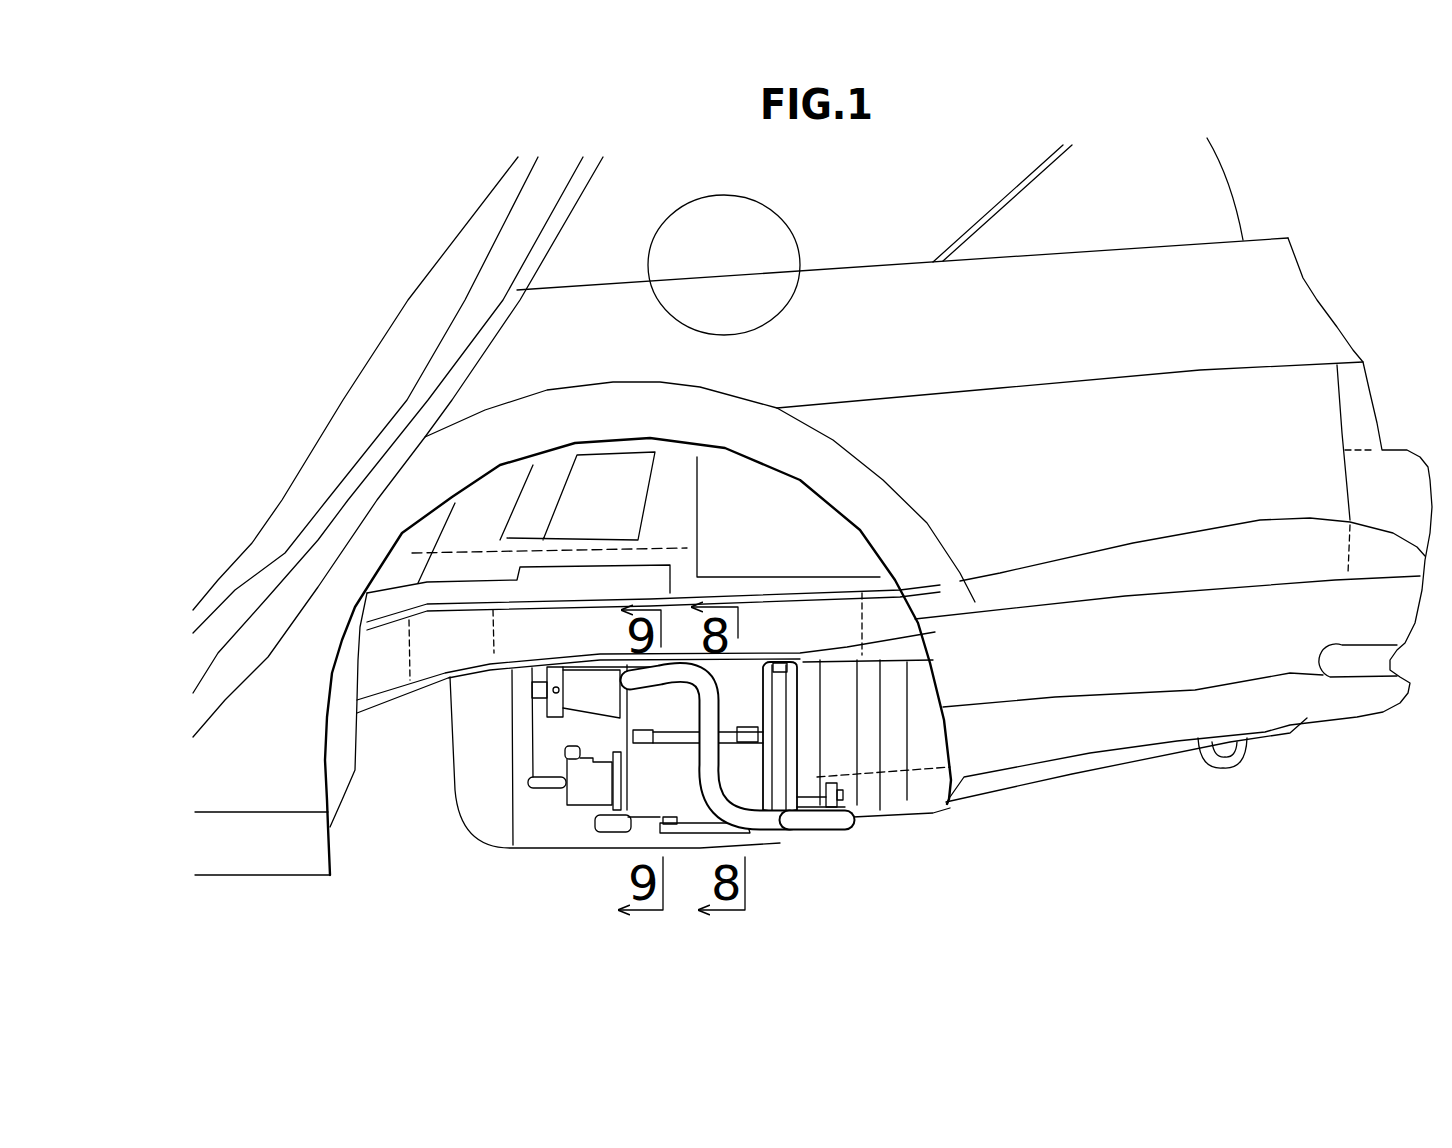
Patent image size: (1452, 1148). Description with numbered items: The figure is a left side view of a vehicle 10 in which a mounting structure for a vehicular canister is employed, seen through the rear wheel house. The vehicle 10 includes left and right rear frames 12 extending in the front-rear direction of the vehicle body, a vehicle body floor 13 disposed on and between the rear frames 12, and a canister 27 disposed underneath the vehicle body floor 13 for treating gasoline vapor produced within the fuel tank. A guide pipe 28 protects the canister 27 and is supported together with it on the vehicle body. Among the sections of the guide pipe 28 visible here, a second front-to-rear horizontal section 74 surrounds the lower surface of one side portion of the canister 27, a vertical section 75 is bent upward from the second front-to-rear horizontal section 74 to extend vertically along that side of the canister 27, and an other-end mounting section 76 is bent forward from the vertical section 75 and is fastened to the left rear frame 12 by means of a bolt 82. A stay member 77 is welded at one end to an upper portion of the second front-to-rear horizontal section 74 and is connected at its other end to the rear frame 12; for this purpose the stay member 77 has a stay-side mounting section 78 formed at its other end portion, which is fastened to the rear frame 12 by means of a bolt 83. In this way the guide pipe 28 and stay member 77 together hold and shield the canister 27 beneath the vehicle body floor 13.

The vehicle 10 is at (297, 150).
The rear frame 12 is at (789, 579).
The vehicle body floor 13 is at (454, 807).
The vehicular canister 27 is at (559, 804).
The guide pipe 28 is at (781, 842).
The second front-to-rear horizontal section 74 is at (807, 827).
The vertical section 75 is at (703, 757).
The other-end mounting section 76 is at (648, 666).
The stay member 77 is at (800, 703).
The stay-side mounting section 78 is at (792, 658).
The bolt 82 is at (655, 680).
The bolt 83 is at (785, 664).